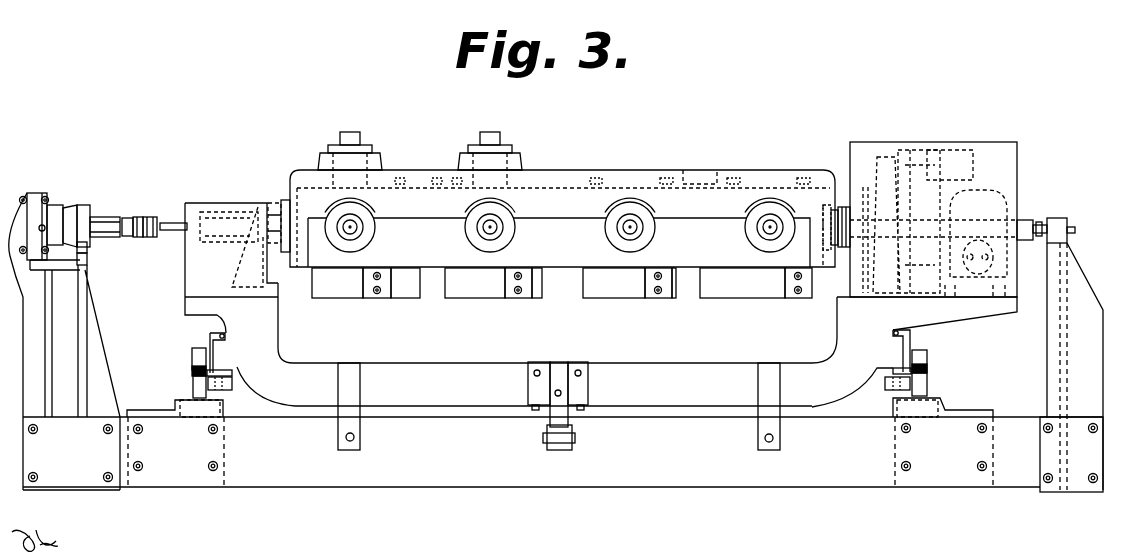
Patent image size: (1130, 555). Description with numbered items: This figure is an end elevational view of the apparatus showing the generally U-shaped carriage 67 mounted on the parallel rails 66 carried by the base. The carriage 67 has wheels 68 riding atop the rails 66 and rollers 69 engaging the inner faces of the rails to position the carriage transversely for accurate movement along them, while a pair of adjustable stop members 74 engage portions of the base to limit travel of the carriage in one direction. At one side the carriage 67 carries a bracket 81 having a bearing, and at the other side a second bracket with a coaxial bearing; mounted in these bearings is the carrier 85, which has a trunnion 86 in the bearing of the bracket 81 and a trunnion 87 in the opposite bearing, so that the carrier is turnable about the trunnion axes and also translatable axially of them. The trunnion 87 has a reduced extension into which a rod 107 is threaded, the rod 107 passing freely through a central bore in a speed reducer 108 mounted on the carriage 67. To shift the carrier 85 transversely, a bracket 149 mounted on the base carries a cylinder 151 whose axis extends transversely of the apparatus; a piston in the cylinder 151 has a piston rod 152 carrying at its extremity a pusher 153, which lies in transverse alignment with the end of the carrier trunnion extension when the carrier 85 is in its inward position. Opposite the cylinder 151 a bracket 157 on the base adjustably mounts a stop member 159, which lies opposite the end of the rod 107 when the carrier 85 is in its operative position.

The cylinder 151 is at (70, 212).
The piston rod 152 is at (128, 215).
The pusher 153 is at (152, 217).
The trunnion 86 is at (277, 207).
The bracket 81 is at (223, 273).
The bracket 149 is at (93, 313).
The carrier 85 is at (592, 152).
The trunnion 87 is at (848, 210).
The speed reducer 108 is at (993, 192).
The rod 107 is at (1022, 218).
The stop member 159 is at (1057, 222).
The wheels 68 is at (200, 347).
The rails 66 is at (197, 382).
The rollers 69 is at (233, 388).
The carriage 67 is at (657, 347).
The adjustable stop members 74 is at (341, 437).
The bracket 157 is at (1047, 390).